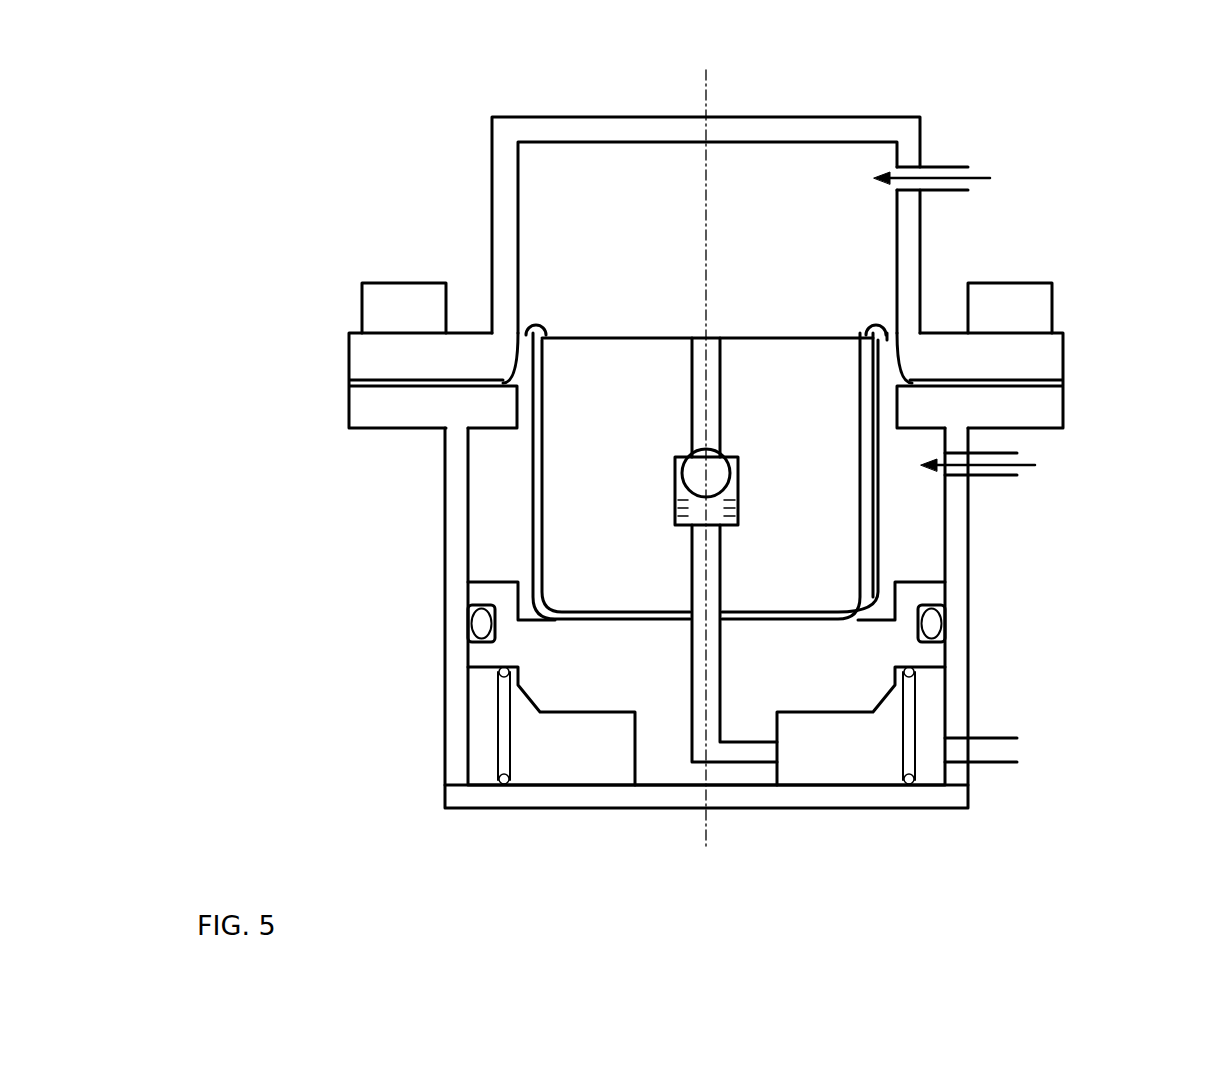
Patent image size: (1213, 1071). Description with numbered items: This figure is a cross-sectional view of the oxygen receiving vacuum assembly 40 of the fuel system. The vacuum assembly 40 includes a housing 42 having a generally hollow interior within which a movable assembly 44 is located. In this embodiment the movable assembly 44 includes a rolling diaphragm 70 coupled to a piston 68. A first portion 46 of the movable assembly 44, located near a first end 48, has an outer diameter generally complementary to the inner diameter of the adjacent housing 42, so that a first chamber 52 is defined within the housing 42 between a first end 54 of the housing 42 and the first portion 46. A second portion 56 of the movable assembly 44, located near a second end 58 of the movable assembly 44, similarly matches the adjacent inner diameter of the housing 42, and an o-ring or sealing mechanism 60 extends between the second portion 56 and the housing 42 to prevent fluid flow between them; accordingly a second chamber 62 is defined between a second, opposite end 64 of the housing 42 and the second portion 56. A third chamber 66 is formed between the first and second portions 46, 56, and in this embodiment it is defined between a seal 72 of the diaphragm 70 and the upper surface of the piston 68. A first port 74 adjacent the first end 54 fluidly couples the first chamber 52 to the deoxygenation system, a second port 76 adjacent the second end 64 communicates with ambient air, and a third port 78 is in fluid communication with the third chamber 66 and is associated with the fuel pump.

The oxygen receiving vacuum assembly 40 is at (268, 153).
The housing 42 is at (868, 133).
The movable assembly 44 is at (531, 628).
The first portion 46 is at (578, 353).
The first end 48 is at (628, 333).
The first chamber 52 is at (668, 187).
The first end 54 is at (730, 148).
The second portion 56 is at (907, 625).
The second end 58 is at (653, 787).
The o-ring or sealing mechanism 60 is at (482, 624).
The second chamber 62 is at (542, 765).
The second end 64 is at (813, 783).
The third chamber 66 is at (488, 520).
The piston 68 is at (812, 673).
The rolling diaphragm 70 is at (813, 507).
The seal 72 is at (537, 460).
The first port 74 is at (940, 165).
The second port 76 is at (998, 752).
The third port 78 is at (1007, 455).